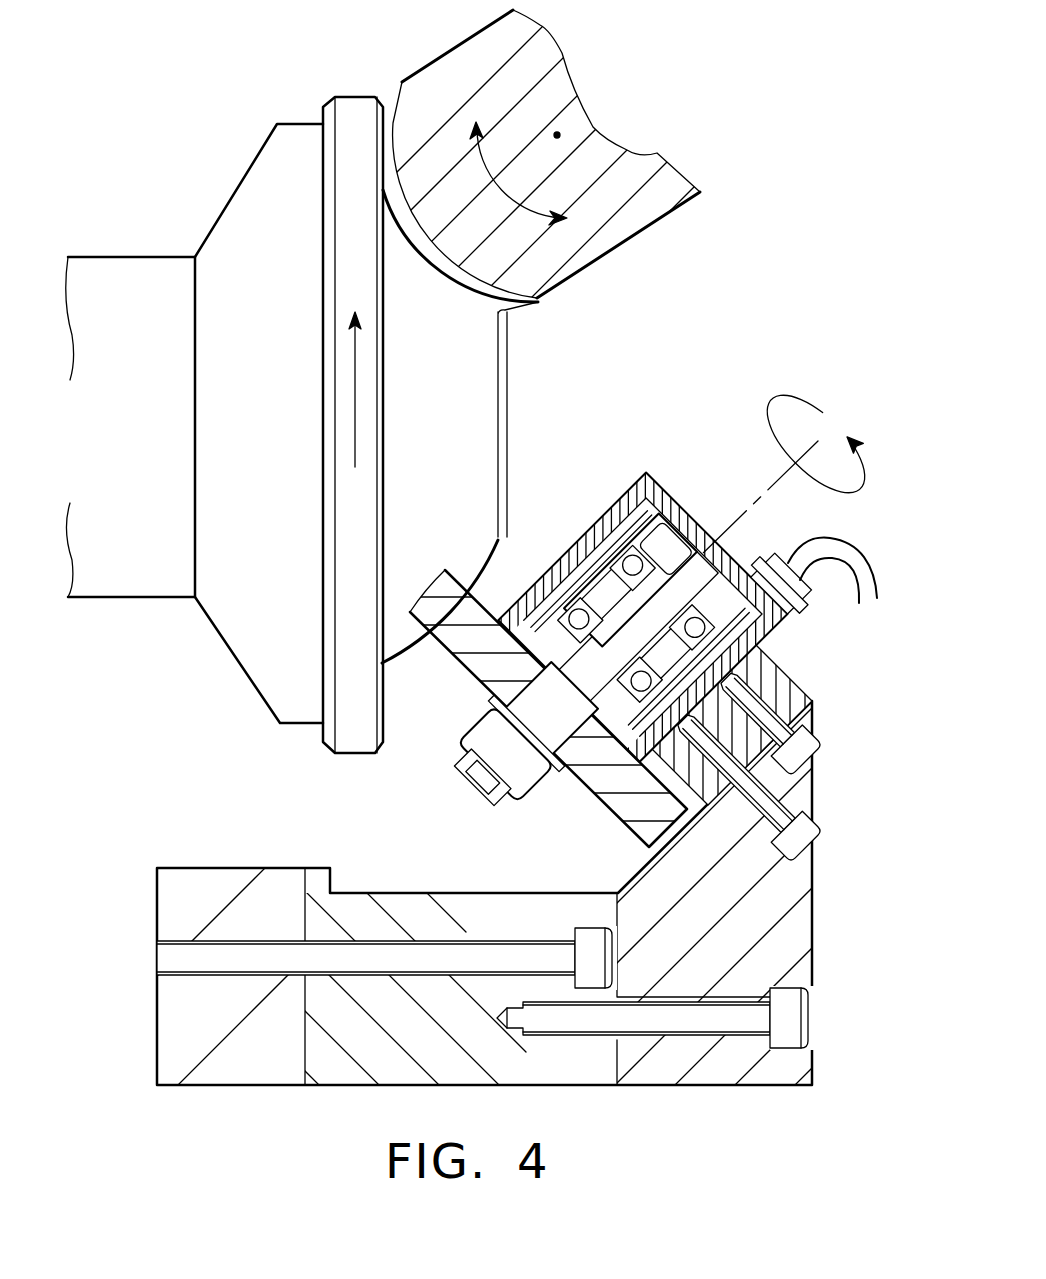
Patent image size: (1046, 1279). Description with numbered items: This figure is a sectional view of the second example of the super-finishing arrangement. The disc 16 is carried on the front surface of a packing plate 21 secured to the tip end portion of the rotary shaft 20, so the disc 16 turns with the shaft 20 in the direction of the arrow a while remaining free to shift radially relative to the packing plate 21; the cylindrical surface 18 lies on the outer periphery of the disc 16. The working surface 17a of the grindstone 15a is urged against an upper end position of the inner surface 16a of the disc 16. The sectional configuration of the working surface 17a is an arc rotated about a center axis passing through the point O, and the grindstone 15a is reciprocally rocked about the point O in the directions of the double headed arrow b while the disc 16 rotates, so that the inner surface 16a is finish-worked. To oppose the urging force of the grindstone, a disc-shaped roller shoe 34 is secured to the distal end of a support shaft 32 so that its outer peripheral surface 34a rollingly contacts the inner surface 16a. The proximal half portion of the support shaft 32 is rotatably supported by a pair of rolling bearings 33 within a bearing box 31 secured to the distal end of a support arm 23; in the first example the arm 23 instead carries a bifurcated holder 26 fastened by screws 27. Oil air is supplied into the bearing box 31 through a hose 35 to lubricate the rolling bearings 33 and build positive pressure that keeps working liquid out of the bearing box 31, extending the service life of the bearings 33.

The grindstone 15a is at (630, 168).
The disc 16 is at (448, 386).
The inner surface 16a is at (400, 627).
The working surface 17a is at (472, 277).
The cylindrical surface 18 is at (343, 95).
The rotary shaft 20 is at (130, 281).
The packing plate 21 is at (242, 215).
The support arms 23 is at (795, 945).
The bifurcated holder 26 is at (787, 677).
The screws 27 is at (765, 762).
The bearing boxes 31 is at (702, 520).
The support shafts 32 is at (608, 652).
The rolling bearings 33 is at (567, 612).
The roller shoes 34 is at (550, 676).
The outer peripheral surfaces 34a is at (430, 573).
The hoses 35 is at (838, 553).
The arrow a is at (352, 399).
The double headed arrow b is at (565, 120).
The point O is at (560, 133).